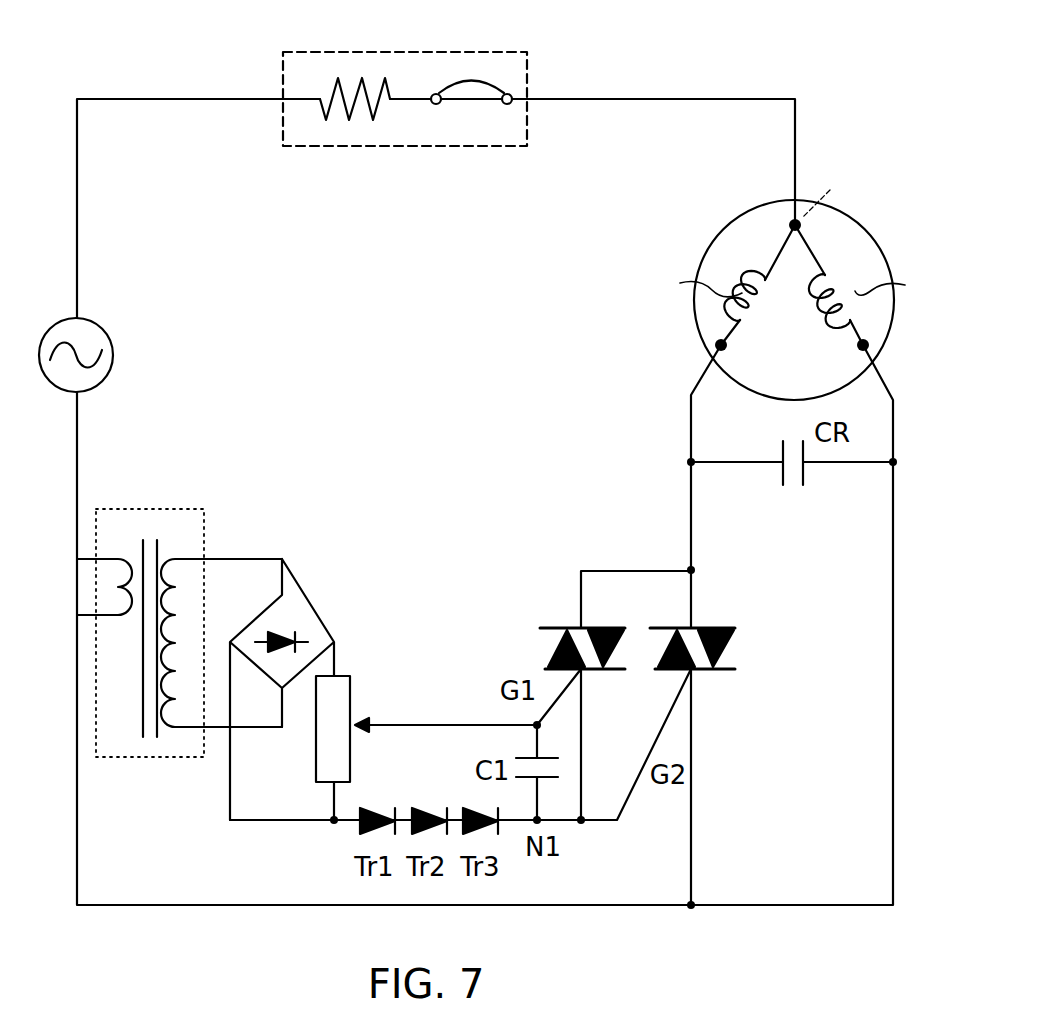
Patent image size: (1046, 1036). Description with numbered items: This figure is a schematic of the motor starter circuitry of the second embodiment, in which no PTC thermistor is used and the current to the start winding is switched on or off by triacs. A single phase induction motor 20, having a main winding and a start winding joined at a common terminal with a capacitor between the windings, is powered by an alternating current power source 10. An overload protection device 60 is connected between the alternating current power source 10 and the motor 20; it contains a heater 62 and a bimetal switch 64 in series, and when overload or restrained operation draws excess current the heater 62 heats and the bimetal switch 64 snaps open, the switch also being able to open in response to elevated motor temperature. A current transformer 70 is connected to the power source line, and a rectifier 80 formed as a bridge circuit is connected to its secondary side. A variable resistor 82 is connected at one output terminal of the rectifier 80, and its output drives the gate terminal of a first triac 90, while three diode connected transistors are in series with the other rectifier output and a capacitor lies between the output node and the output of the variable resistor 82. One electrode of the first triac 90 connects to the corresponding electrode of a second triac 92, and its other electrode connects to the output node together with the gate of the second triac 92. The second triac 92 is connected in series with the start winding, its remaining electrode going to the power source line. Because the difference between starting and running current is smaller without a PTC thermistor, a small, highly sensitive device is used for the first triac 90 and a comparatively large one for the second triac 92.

The alternating current power source 10 is at (113, 355).
The single phase induction motor 20 is at (850, 208).
The overload protection device 60 is at (405, 100).
The heater 62 is at (345, 127).
The bimetal switch 64 is at (467, 125).
The current transformer 70 is at (136, 509).
The rectifier 80 is at (300, 607).
The variable resistor 82 is at (343, 685).
The first triac 90 is at (558, 617).
The second triac 92 is at (745, 610).